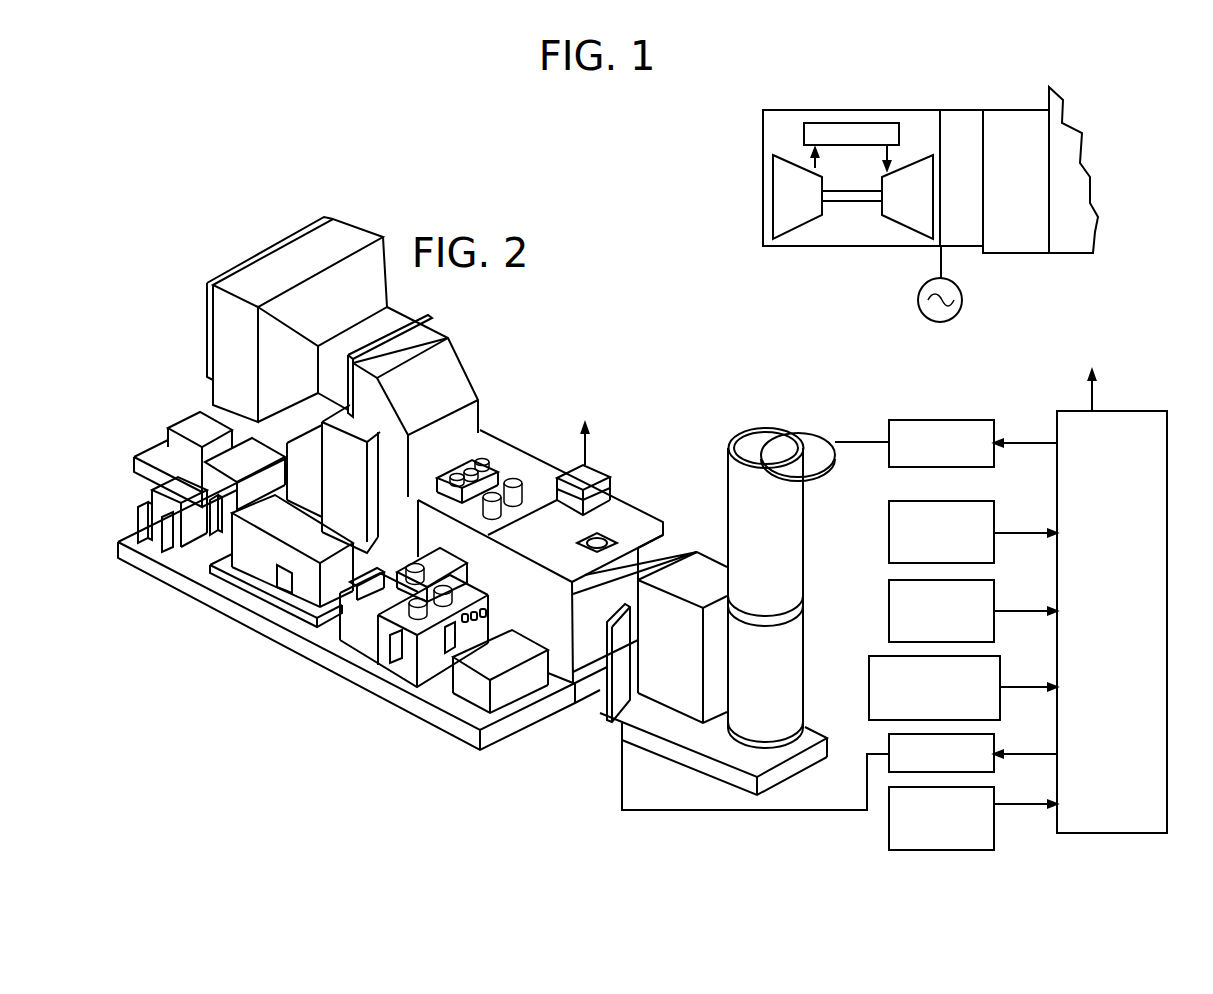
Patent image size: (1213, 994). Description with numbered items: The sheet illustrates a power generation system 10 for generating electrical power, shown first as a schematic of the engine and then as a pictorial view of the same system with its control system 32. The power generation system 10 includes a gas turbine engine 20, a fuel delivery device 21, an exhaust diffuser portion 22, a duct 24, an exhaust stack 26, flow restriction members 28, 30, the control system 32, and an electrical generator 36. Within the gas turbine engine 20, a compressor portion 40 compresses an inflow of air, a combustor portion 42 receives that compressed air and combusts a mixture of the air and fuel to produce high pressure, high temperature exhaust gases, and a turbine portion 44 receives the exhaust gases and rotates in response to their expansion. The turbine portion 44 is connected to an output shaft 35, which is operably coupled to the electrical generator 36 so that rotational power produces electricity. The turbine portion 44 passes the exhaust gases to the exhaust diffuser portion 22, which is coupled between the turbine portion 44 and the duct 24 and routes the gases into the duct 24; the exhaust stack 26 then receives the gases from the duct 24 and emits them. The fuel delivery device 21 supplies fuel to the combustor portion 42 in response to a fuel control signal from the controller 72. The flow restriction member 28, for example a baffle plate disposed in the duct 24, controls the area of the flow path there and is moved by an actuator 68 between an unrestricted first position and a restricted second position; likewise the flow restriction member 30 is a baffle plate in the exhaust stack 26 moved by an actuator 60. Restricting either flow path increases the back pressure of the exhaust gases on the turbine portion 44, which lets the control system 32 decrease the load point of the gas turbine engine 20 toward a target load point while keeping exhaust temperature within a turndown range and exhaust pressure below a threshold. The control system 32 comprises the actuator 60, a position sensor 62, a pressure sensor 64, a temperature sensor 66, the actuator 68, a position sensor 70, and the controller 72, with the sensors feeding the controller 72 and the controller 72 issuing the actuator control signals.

In FIG. 1, the power generation system 10 is at (728, 141).
In FIG. 2, the power generation system 10 is at (524, 361).
In FIG. 1, the gas turbine engine 20 is at (833, 96).
In FIG. 2, the gas turbine engine 20 is at (492, 431).
In FIG. 2, the fuel delivery device 21 is at (598, 466).
In FIG. 1, the exhaust diffuser portion 22 is at (958, 110).
In FIG. 1, the duct 24 is at (1017, 110).
In FIG. 2, the duct 24 is at (702, 572).
In FIG. 1, the exhaust stack 26 is at (1042, 88).
In FIG. 2, the exhaust stack 26 is at (771, 540).
In FIG. 2, the flow restriction member 28 is at (612, 722).
In FIG. 2, the flow restriction member 30 is at (802, 433).
In FIG. 2, the control system 32 is at (1019, 403).
In FIG. 1, the output shaft 35 is at (943, 263).
In FIG. 1, the electrical generator 36 is at (962, 298).
In FIG. 1, the compressor portion 40 is at (772, 215).
In FIG. 1, the combustor portion 42 is at (818, 123).
In FIG. 1, the turbine portion 44 is at (912, 230).
In FIG. 2, the actuator 60 is at (948, 420).
In FIG. 2, the position sensor 62 is at (994, 517).
In FIG. 2, the pressure sensor 64 is at (994, 595).
In FIG. 2, the temperature sensor 66 is at (1000, 672).
In FIG. 2, the actuator 68 is at (994, 763).
In FIG. 2, the position sensor 70 is at (889, 833).
In FIG. 2, the controller 72 is at (1131, 411).